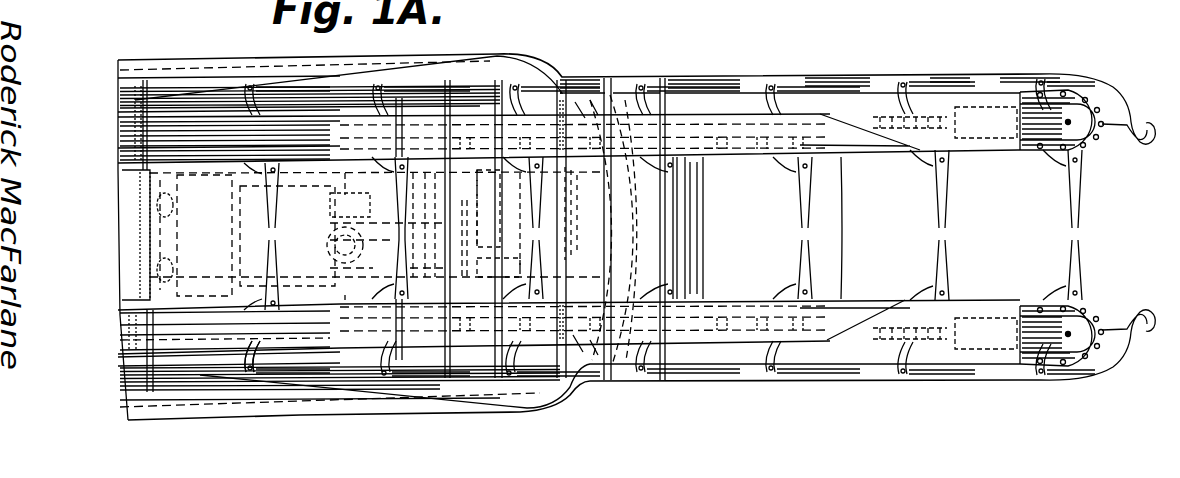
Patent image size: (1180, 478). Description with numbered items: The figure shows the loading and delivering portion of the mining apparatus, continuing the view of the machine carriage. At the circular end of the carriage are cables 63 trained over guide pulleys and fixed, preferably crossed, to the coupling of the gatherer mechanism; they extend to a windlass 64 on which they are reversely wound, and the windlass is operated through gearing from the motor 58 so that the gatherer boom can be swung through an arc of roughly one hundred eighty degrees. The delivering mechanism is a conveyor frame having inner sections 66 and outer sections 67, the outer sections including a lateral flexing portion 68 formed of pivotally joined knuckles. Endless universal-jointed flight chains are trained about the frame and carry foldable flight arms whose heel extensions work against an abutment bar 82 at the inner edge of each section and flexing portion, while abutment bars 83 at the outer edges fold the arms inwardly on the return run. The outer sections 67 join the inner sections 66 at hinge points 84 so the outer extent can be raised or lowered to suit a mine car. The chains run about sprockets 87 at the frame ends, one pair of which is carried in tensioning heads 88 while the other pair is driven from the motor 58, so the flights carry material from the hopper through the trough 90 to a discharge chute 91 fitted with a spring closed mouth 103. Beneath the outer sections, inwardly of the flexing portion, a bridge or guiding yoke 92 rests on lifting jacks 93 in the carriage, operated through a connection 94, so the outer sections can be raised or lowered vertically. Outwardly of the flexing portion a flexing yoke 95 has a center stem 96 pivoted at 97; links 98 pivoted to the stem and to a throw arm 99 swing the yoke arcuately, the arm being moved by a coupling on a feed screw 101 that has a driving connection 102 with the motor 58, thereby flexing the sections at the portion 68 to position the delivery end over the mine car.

The motor 58 is at (422, 225).
The cables 63 is at (200, 62).
The windlass 64 is at (400, 270).
The inner sections 66 is at (125, 125).
The outer sections 67 is at (276, 357).
The lateral flexing portion 68 is at (610, 70).
The abutment bar 82 is at (842, 228).
The abutment bars 83 is at (1125, 96).
The hinge points 84 is at (145, 147).
The sprockets 87 is at (1100, 134).
The tensioning heads 88 is at (1040, 128).
The trough 90 is at (120, 240).
The discharge chute 91 is at (678, 238).
The bridge or guiding yoke 92 is at (566, 384).
The lifting jacks 93 is at (505, 60).
The connection 94 is at (489, 280).
The flexing yoke 95 is at (625, 120).
The center stem 96 is at (358, 233).
The pivot 97 is at (479, 220).
The links 98 is at (385, 205).
The throw arm 99 is at (247, 235).
The feed screw 101 is at (132, 195).
The driving connection 102 is at (128, 272).
The spring closed mouth 103 is at (705, 203).